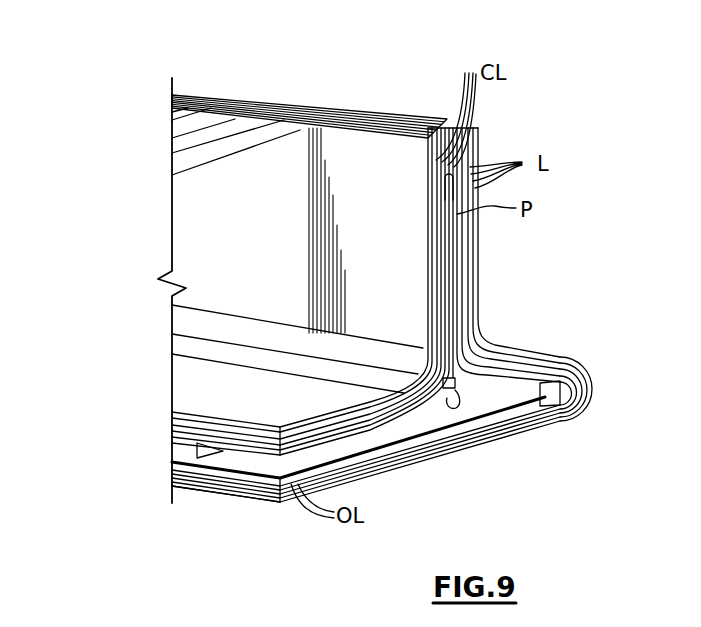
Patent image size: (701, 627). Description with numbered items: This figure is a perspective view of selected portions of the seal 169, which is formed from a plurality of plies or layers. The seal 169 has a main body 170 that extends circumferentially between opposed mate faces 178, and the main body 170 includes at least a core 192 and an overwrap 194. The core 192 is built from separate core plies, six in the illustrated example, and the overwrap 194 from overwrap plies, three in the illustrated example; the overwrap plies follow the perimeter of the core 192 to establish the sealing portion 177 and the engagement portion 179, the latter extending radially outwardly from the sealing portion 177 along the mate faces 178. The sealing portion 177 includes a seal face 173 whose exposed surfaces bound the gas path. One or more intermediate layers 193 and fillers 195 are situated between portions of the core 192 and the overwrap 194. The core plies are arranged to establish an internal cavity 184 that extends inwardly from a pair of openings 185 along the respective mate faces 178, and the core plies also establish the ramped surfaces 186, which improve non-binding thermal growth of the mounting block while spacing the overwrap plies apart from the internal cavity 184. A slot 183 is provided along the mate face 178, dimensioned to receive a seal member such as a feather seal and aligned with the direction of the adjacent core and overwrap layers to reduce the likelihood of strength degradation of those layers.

The seal 169 is at (104, 78).
The internal cavity 184 is at (207, 186).
The ramped surfaces 186 is at (188, 145).
The main body 170 is at (478, 250).
The openings 185 is at (413, 284).
The engagement portion 179 is at (480, 142).
The sealing portion 177 is at (584, 359).
The fillers 195 is at (556, 382).
The mate faces 178 is at (578, 397).
The intermediate layers 193 is at (544, 409).
The slot 183 is at (377, 442).
The seal face 173 is at (490, 456).
The overwrap 194 is at (212, 500).
The core 192 is at (160, 447).